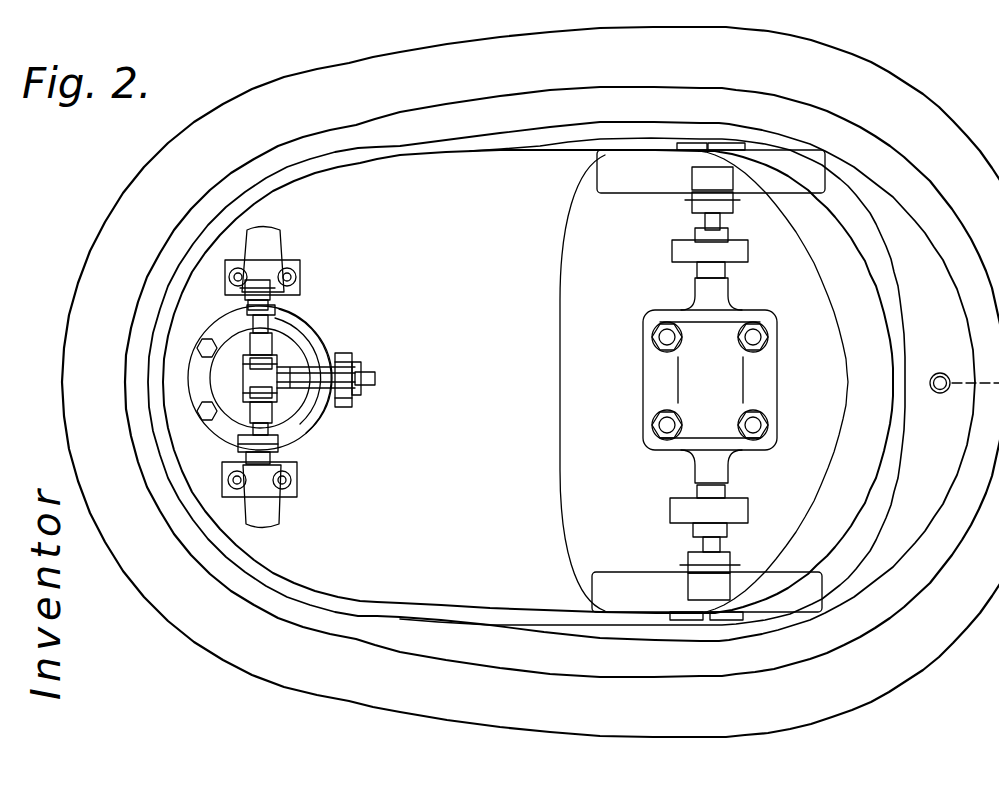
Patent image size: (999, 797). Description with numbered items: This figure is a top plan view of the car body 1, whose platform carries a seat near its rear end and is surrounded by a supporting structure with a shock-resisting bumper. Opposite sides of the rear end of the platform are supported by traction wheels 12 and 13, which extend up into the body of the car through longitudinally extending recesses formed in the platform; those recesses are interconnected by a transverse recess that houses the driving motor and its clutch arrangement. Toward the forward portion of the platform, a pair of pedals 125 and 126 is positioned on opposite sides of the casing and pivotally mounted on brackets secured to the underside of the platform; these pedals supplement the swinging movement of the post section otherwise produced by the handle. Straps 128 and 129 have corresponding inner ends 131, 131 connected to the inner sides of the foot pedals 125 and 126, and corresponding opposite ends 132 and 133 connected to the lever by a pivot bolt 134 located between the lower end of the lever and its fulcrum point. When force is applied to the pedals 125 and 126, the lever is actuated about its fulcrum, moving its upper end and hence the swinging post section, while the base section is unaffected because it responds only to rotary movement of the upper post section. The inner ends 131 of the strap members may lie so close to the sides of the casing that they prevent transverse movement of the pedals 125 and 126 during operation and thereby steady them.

The car body 1 is at (140, 377).
The traction wheel 12 is at (826, 191).
The traction wheel 13 is at (823, 588).
The pedal 125 is at (282, 458).
The pedal 126 is at (277, 296).
The strap 128 is at (292, 431).
The strap 129 is at (283, 314).
The inner end 131 is at (292, 338).
The opposite end 132 is at (361, 386).
The opposite end 133 is at (361, 367).
The pivot bolt 134 is at (344, 353).